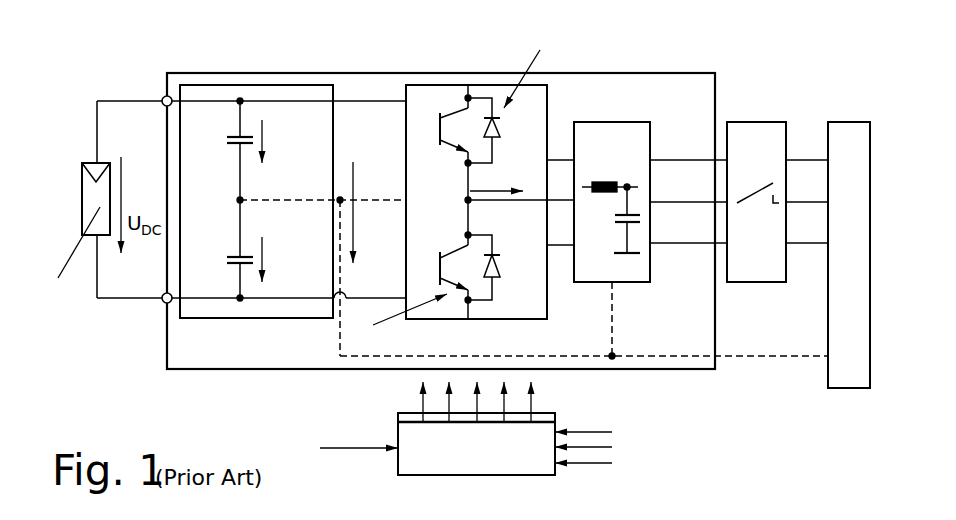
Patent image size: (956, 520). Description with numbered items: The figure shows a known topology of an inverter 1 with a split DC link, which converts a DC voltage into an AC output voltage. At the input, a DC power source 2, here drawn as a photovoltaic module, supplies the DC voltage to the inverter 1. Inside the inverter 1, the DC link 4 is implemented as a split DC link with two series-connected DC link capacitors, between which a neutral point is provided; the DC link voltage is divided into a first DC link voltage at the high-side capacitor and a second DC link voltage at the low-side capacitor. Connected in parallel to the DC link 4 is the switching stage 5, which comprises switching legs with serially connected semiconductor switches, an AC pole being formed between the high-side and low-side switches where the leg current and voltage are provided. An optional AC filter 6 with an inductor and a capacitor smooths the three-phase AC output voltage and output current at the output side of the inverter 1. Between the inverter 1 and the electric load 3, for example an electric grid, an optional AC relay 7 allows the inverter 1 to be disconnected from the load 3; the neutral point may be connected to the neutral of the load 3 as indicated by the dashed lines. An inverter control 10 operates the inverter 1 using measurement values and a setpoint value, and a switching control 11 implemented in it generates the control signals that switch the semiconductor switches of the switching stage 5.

The inverter 1 is at (443, 73).
The DC power source 2 is at (78, 158).
The electric load 3 is at (862, 256).
The DC link 4 is at (235, 84).
The switching stage 5 is at (427, 84).
The AC filter 6 is at (632, 121).
The AC relay 7 is at (757, 121).
The inverter control 10 is at (491, 459).
The switching control 11 is at (556, 413).